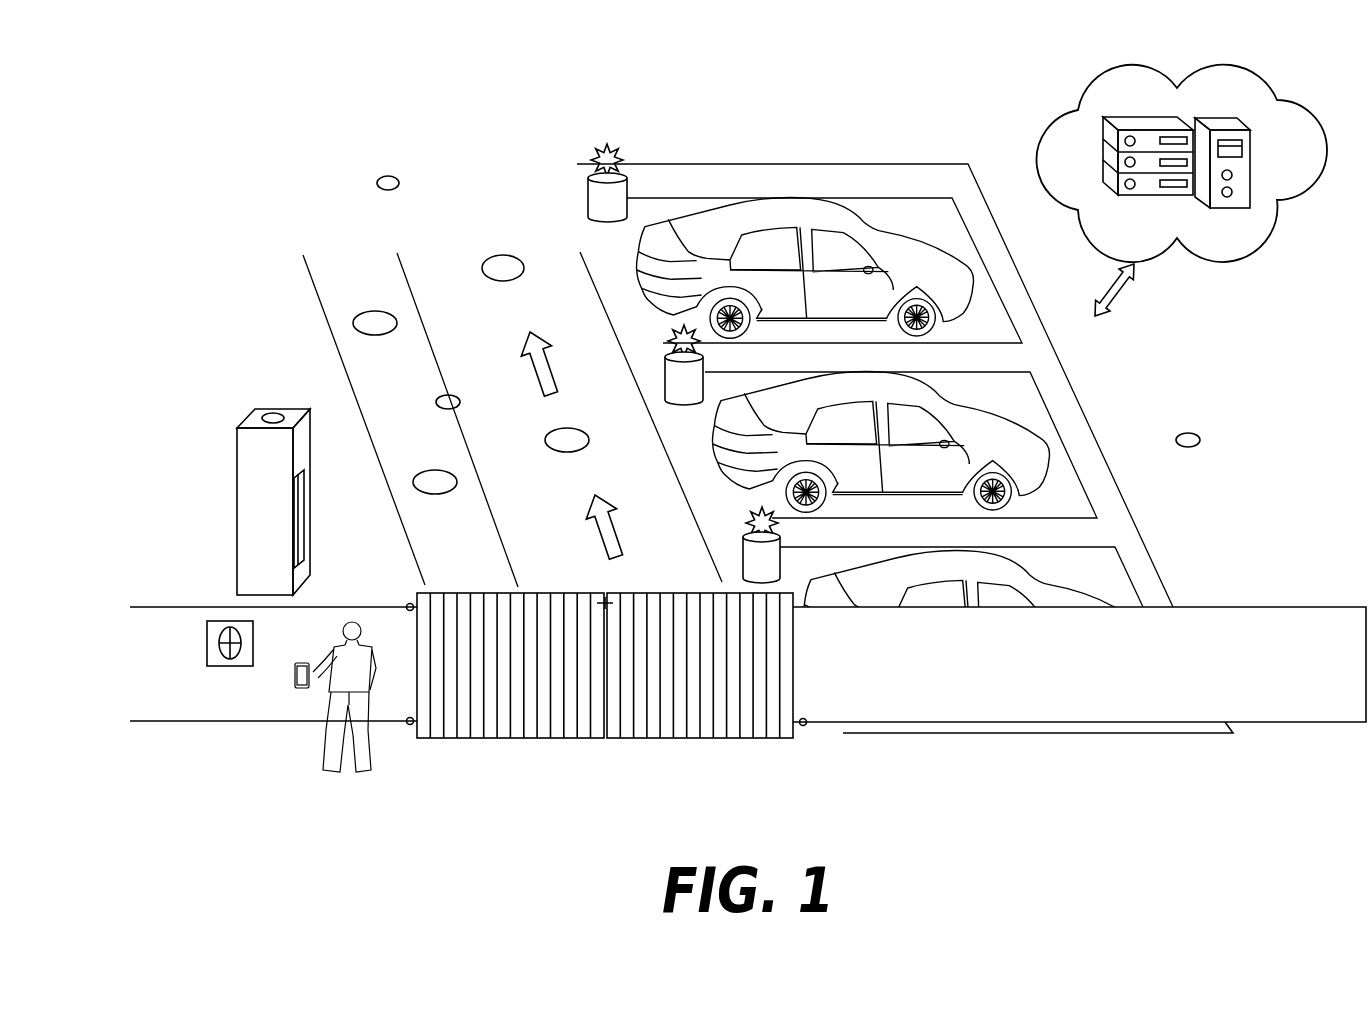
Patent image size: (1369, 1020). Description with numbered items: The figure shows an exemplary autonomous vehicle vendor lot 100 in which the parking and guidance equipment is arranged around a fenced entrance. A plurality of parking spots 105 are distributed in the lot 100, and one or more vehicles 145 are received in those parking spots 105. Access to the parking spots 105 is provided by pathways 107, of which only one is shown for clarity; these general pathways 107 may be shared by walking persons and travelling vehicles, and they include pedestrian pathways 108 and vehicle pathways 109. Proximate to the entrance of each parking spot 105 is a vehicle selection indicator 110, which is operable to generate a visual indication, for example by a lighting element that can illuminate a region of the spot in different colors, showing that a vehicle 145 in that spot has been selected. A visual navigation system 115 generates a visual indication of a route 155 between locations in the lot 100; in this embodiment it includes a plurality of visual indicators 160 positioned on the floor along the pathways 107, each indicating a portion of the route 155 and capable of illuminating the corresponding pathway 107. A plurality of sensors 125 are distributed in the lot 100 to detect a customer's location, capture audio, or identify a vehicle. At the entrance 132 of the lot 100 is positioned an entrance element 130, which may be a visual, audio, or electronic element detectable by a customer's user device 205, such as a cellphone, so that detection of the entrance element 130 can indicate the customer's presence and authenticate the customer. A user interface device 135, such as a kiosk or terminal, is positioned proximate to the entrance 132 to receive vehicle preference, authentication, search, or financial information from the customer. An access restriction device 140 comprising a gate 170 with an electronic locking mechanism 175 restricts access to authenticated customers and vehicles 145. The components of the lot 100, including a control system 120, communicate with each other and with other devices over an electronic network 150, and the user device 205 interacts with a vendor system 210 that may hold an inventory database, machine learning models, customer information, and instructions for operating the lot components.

The autonomous vehicle vendor lot 100 is at (257, 188).
The parking spots 105 is at (598, 242).
The pathways 107 is at (377, 217).
The pedestrian pathways 108 is at (323, 262).
The vehicle pathways 109 is at (437, 264).
The vehicle selection indicators 110 is at (596, 150).
The visual navigation system 115 is at (506, 326).
The control system 120 is at (1060, 104).
The sensors 125 is at (384, 166).
The entrance element 130 is at (198, 643).
The entrance 132 is at (578, 757).
The user interface device 135 is at (268, 394).
The access restriction device 140 is at (489, 566).
The vehicles 145 is at (787, 186).
The electronic network 150 is at (1106, 283).
The route 155 is at (516, 372).
The visual indicators 160 is at (372, 307).
The gate 170 is at (411, 592).
The electronic locking mechanism 175 is at (597, 589).
The user device 205 is at (290, 682).
The vendor system 210 is at (1058, 158).